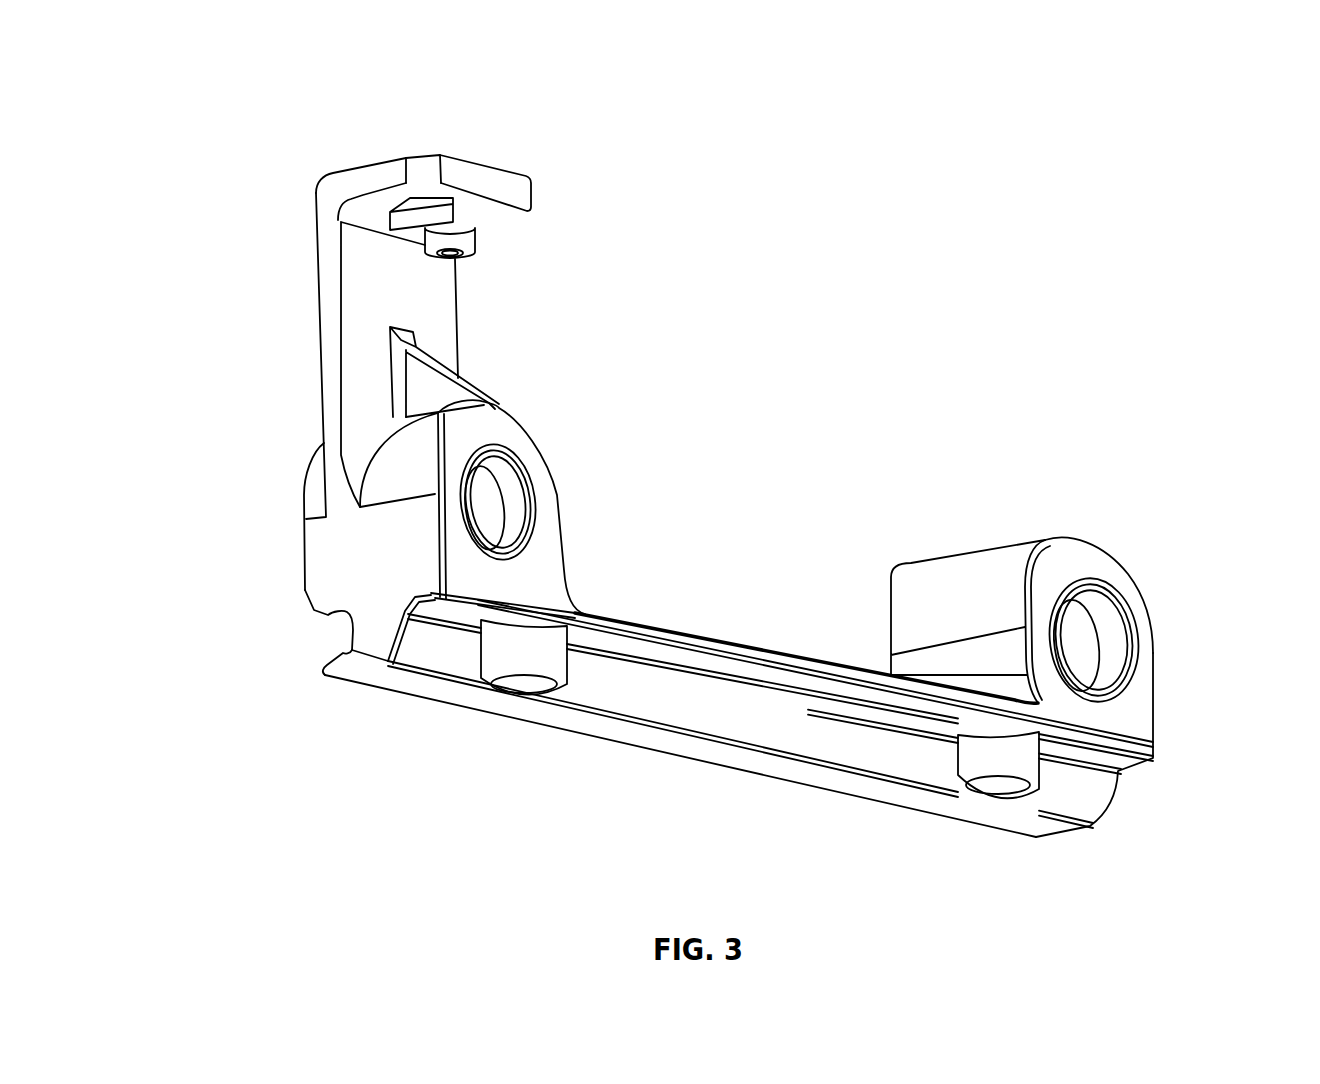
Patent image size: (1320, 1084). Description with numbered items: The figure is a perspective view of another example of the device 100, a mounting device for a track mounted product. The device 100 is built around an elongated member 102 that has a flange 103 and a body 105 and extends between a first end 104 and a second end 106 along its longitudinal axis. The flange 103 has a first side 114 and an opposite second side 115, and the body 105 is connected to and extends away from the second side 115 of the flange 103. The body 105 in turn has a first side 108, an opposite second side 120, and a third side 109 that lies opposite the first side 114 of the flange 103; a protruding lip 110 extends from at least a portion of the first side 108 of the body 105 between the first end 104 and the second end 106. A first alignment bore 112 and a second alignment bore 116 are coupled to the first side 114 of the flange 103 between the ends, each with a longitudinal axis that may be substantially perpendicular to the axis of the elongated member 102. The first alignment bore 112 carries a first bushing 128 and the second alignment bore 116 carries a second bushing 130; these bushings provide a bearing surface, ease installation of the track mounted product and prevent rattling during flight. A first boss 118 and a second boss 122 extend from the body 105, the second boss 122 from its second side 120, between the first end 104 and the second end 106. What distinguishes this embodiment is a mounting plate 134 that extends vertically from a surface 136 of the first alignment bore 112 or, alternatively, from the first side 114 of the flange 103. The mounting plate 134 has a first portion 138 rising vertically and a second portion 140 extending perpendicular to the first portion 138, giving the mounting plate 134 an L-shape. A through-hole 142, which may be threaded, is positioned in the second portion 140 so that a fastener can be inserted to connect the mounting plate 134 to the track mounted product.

The device 100 is at (219, 116).
The elongated member 102 is at (843, 640).
The flange 103 is at (814, 669).
The first end 104 is at (289, 666).
The body 105 is at (362, 644).
The second end 106 is at (1119, 793).
The first side of the body 108 is at (290, 600).
The third side of the body 109 is at (713, 766).
The protruding lip 110 is at (328, 653).
The first alignment bore 112 is at (522, 430).
The first side of the flange 114 is at (645, 597).
The second side of the flange 115 is at (462, 605).
The second alignment bore 116 is at (1108, 560).
The first boss 118 is at (522, 672).
The second side of the body 120 is at (627, 688).
The second boss 122 is at (985, 778).
The first bushing 128 is at (498, 504).
The second bushing 130 is at (1093, 644).
The mounting plate 134 is at (295, 330).
The surface of the first alignment bore 136 is at (296, 457).
The first portion of the mounting plate 138 is at (317, 285).
The second portion of the mounting plate 140 is at (488, 157).
The through-hole 142 is at (456, 258).